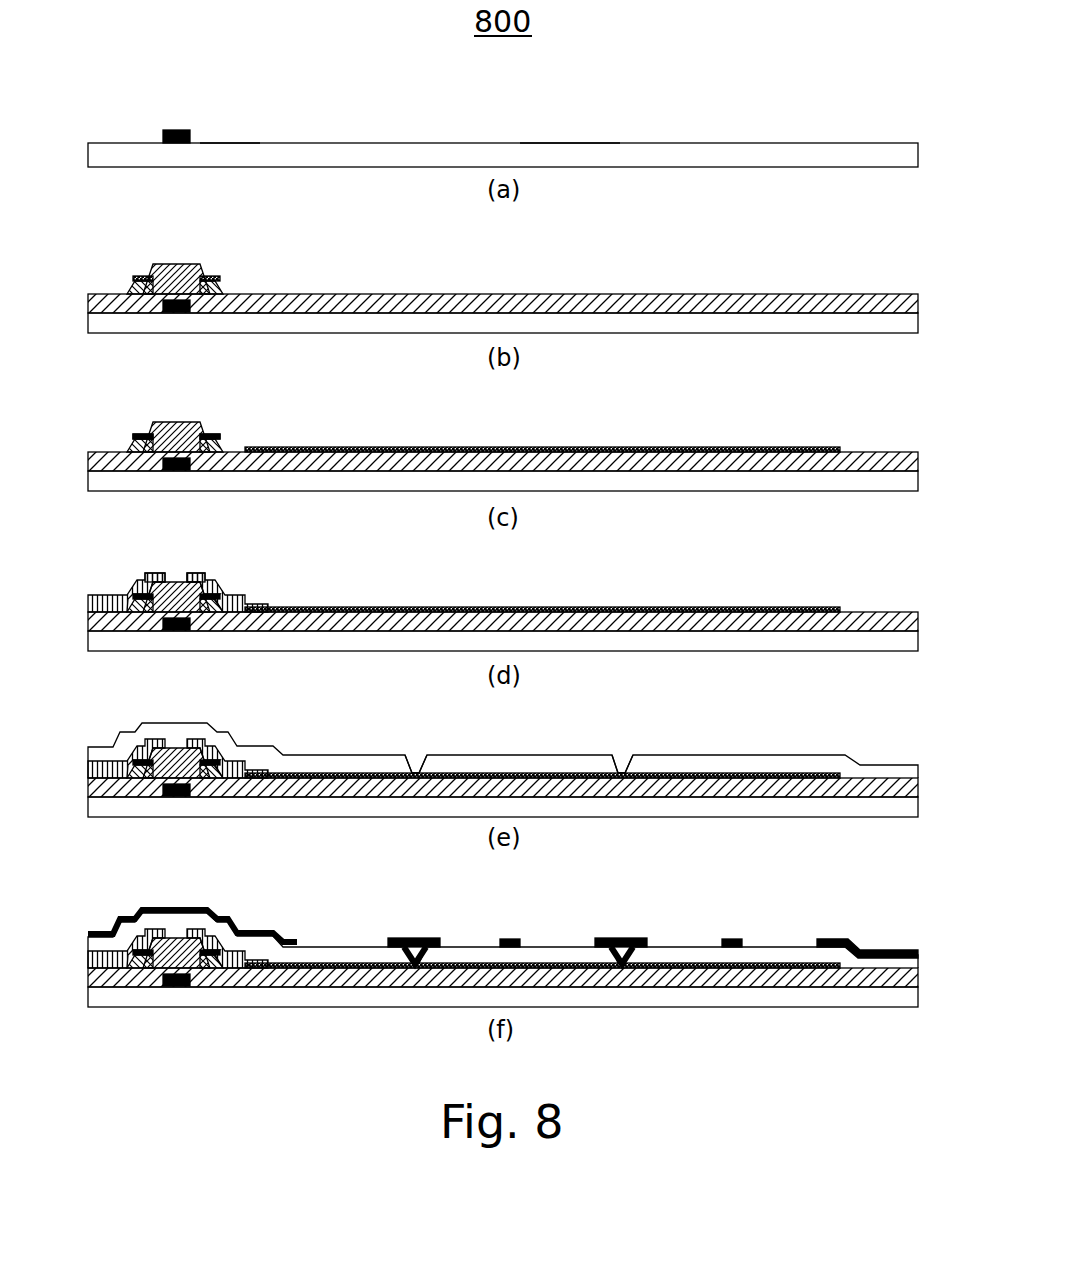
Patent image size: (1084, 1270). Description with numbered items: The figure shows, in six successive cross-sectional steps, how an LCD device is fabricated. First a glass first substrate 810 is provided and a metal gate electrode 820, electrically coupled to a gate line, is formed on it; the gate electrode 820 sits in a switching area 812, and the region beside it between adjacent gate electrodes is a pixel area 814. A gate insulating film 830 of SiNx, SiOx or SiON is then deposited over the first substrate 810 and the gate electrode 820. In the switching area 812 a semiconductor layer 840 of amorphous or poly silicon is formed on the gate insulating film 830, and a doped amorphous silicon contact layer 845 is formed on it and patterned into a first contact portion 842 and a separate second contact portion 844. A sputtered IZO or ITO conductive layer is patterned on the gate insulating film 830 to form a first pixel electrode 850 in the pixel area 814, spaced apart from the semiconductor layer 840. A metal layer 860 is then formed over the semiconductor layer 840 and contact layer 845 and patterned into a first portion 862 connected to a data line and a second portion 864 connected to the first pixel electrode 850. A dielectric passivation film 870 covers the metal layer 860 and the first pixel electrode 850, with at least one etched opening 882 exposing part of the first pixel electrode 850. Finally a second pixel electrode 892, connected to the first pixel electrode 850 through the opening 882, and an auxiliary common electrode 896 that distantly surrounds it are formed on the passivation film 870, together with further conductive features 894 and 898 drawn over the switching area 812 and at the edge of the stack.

The first substrate 810 is at (503, 135).
The switching area 812 is at (238, 109).
The pixel area 814 is at (570, 108).
The gate electrode 820 is at (178, 109).
The gate insulating film 830 is at (503, 284).
The semiconductor layer 840 is at (176, 255).
The first contact portion 842 is at (107, 260).
The second contact portion 844 is at (244, 260).
The contact layer 845 is at (171, 416).
The first pixel electrode 850 is at (568, 431).
The metal layer 860 is at (175, 579).
The first portion 862 is at (133, 554).
The second portion 864 is at (221, 554).
The passivation film 870 is at (503, 749).
The opening 882 is at (488, 742).
The second pixel electrode 892 is at (512, 927).
The top electrode over transistor 894 is at (192, 899).
The auxiliary common electrode 896 is at (619, 919).
The edge contact pad 898 is at (866, 924).